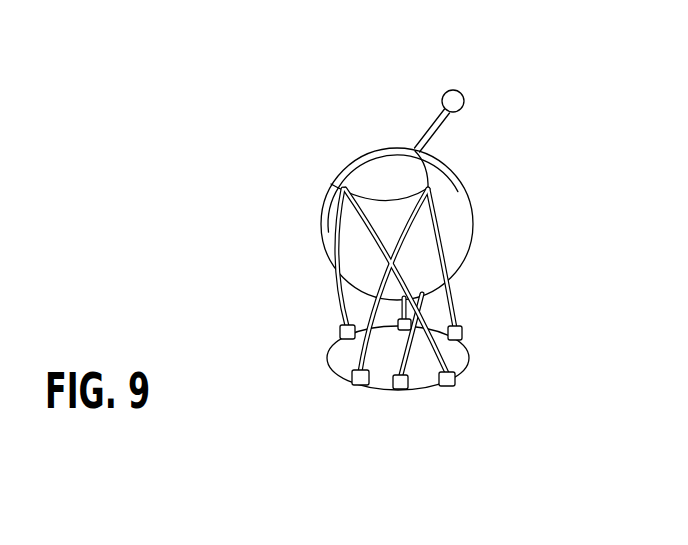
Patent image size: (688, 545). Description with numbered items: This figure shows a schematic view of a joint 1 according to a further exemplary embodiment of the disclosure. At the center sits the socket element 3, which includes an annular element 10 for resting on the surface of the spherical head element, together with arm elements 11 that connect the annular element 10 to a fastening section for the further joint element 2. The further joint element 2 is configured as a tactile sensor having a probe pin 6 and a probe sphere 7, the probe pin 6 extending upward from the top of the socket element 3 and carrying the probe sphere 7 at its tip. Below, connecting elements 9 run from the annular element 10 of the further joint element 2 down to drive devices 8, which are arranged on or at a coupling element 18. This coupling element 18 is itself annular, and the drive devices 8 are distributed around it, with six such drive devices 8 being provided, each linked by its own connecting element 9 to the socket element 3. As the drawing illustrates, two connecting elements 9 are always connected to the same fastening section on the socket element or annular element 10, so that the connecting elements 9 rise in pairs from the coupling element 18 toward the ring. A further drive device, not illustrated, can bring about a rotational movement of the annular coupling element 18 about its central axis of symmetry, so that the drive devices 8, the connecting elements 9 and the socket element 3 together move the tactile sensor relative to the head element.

The joint 1 is at (232, 282).
The further joint element 2 is at (434, 138).
The socket element 3 is at (453, 185).
The probe pin 6 is at (443, 125).
The probe sphere 7 is at (465, 98).
The drive devices 8 is at (341, 338).
The connecting elements 9 is at (371, 229).
The annular element 10 is at (385, 197).
The arm elements 11 is at (359, 165).
The coupling element 18 is at (471, 357).